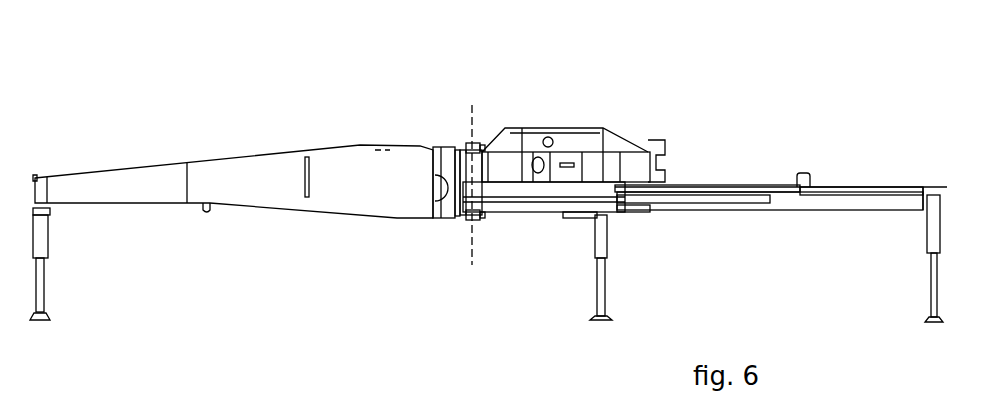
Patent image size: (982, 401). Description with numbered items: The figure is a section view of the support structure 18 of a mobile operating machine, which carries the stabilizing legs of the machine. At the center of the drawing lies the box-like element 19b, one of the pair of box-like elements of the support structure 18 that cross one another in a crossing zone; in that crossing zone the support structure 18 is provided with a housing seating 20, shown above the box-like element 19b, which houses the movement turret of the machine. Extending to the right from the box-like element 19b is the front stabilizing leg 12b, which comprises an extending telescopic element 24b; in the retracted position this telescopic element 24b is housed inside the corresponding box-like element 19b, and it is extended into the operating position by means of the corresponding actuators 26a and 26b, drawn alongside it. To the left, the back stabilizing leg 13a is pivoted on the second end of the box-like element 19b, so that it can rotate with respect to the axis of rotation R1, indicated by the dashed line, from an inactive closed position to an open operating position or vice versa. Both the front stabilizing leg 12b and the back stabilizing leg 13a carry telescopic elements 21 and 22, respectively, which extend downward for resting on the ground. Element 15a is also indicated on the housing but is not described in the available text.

The back stabilizing leg 13a is at (254, 156).
The support structure 18 is at (471, 93).
The housing seating 20 is at (552, 128).
The housing body 15a is at (622, 152).
The box-like element 19b is at (549, 217).
The front stabilizing leg 12b is at (873, 180).
The extending telescopic element 24b is at (797, 205).
The actuator 26a is at (725, 192).
The actuator 26b is at (693, 198).
The telescopic element 21 is at (933, 238).
The telescopic element 22 is at (41, 237).
The axis of rotation R1 is at (471, 241).